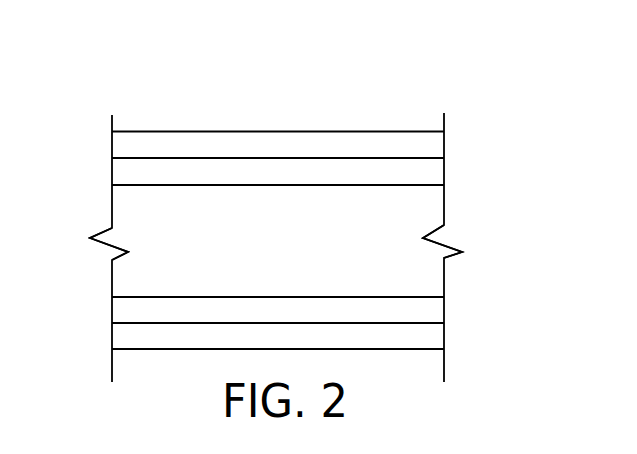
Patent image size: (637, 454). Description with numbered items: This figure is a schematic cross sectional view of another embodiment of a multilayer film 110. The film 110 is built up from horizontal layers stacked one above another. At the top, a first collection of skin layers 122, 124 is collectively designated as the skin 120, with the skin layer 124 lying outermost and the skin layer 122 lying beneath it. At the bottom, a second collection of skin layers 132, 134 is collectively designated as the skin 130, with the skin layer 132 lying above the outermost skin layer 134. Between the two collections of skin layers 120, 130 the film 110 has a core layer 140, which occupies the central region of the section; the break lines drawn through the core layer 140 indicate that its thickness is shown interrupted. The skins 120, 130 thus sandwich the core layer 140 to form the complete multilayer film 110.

The multilayer film 110 is at (130, 84).
The skin 120 is at (103, 132).
The skin layer 122 is at (423, 168).
The skin layer 124 is at (423, 145).
The skin 130 is at (103, 298).
The skin layer 132 is at (423, 312).
The skin layer 134 is at (423, 333).
The core layer 140 is at (423, 207).